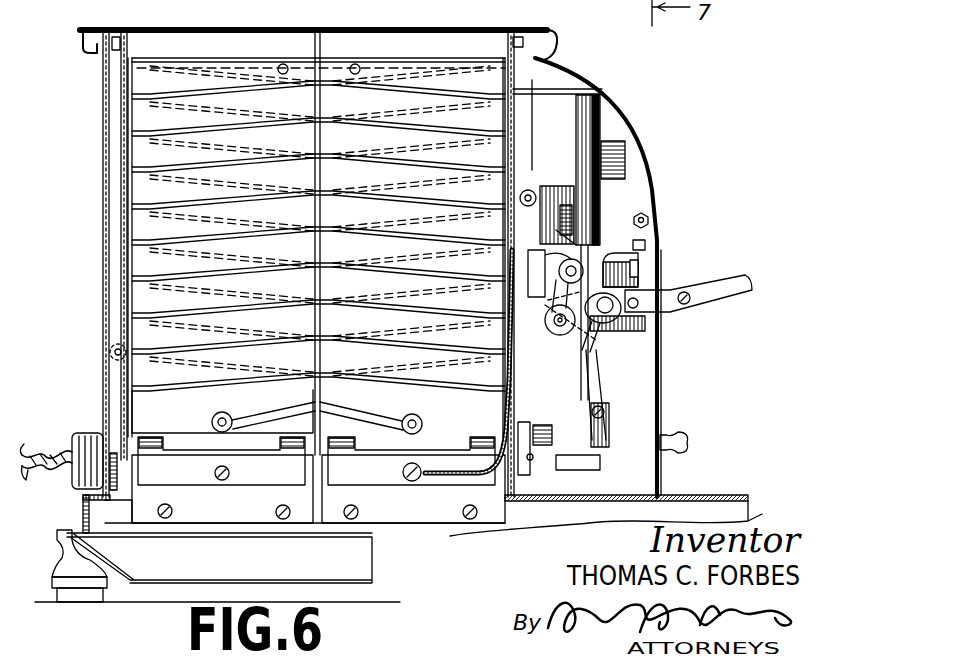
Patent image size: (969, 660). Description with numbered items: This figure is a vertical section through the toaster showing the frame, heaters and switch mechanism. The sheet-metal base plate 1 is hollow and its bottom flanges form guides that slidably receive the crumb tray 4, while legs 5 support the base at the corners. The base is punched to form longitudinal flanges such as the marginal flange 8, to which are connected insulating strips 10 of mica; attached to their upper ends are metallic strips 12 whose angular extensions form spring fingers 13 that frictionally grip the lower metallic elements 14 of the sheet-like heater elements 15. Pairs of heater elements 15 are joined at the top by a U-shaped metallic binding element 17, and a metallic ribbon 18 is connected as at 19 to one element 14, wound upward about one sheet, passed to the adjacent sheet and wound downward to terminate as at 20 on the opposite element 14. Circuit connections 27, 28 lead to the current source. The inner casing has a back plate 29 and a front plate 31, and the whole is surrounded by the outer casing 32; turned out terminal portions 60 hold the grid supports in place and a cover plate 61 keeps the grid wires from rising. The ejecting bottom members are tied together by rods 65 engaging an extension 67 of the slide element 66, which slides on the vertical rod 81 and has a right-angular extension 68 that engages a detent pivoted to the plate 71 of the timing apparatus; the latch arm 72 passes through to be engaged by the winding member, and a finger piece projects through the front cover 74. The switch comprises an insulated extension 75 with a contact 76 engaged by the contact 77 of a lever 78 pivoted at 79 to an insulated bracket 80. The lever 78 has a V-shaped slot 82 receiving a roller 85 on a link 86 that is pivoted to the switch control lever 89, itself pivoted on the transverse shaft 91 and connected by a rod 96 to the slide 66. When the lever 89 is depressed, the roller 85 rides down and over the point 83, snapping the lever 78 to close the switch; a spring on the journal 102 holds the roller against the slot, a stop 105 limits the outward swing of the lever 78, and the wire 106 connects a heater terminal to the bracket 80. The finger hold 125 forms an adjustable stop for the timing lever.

The base plate 1 is at (707, 494).
The crumb tray 4 is at (157, 582).
The legs 5 is at (70, 565).
The marginal flange 8 is at (117, 517).
The insulating strips 10 is at (142, 510).
The metallic strips 12 is at (247, 478).
The spring fingers 13 is at (152, 437).
The lower metallic elements 14 is at (196, 450).
The sheet-like heater elements 15 is at (488, 117).
The U-shaped metallic binding element 17 is at (217, 43).
The metallic ribbon 18 is at (233, 67).
The ribbon terminal connection 19 is at (232, 417).
The ribbon terminal fastening 20 is at (422, 421).
The circuit connection 27 is at (28, 458).
The circuit connection 28 is at (28, 480).
The back plate 29 is at (127, 173).
The front plate 31 is at (542, 68).
The outer casing 32 is at (103, 100).
The turned out terminal portions 60 is at (517, 33).
The cover plate 61 is at (192, 30).
The rods 65 is at (519, 198).
The slide element 66 is at (668, 247).
The extension of slide element 67 is at (555, 190).
The right-angular extension 68 is at (627, 160).
The plate of timing apparatus 71 is at (648, 262).
The arm of latch 72 is at (660, 250).
The front cover 74 is at (630, 162).
The extension 75 is at (522, 478).
The contact 76 is at (545, 478).
The contact of lever 77 is at (583, 427).
The lever 78 is at (600, 385).
The pivot 79 is at (646, 243).
The bracket 80 is at (572, 218).
The vertical rod 81 is at (592, 127).
The V-shaped slot 82 is at (650, 326).
The point 83 is at (583, 337).
The roller 85 is at (545, 323).
The link 86 is at (556, 264).
The switch control lever 89 is at (700, 310).
The shaft 91 is at (115, 350).
The rod 96 is at (638, 300).
The journal of roller 102 is at (573, 330).
The stop 105 is at (574, 238).
The wire 106 is at (510, 376).
The finger hold 125 is at (688, 435).